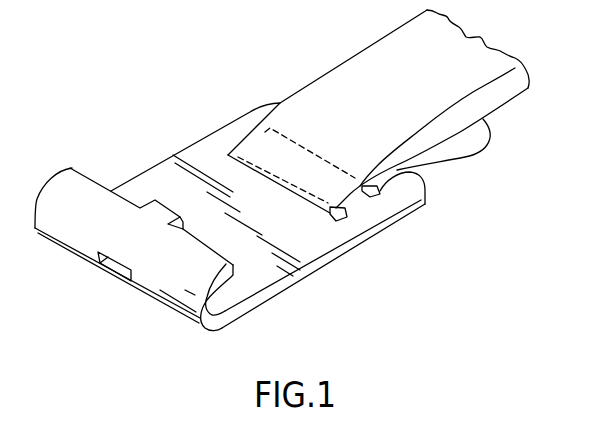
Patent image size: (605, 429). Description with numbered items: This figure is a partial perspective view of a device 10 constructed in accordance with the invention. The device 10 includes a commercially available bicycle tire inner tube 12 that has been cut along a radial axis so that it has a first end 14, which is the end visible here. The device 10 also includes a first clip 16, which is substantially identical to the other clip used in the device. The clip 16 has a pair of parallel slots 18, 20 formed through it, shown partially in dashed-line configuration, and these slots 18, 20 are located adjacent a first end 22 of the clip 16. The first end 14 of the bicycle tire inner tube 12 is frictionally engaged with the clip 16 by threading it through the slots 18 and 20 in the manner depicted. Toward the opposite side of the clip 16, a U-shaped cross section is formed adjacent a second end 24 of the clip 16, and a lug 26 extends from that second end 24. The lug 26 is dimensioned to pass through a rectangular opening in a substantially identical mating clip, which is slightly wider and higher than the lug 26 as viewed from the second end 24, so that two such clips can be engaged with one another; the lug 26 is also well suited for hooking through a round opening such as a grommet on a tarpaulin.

The device 10 is at (127, 82).
The bicycle tire inner tube 12 is at (333, 78).
The first end 14 is at (483, 119).
The first clip 16 is at (203, 147).
The slot 18 is at (345, 217).
The slot 20 is at (380, 197).
The first end 22 is at (413, 172).
The second end 24 is at (100, 183).
The lug 26 is at (173, 213).